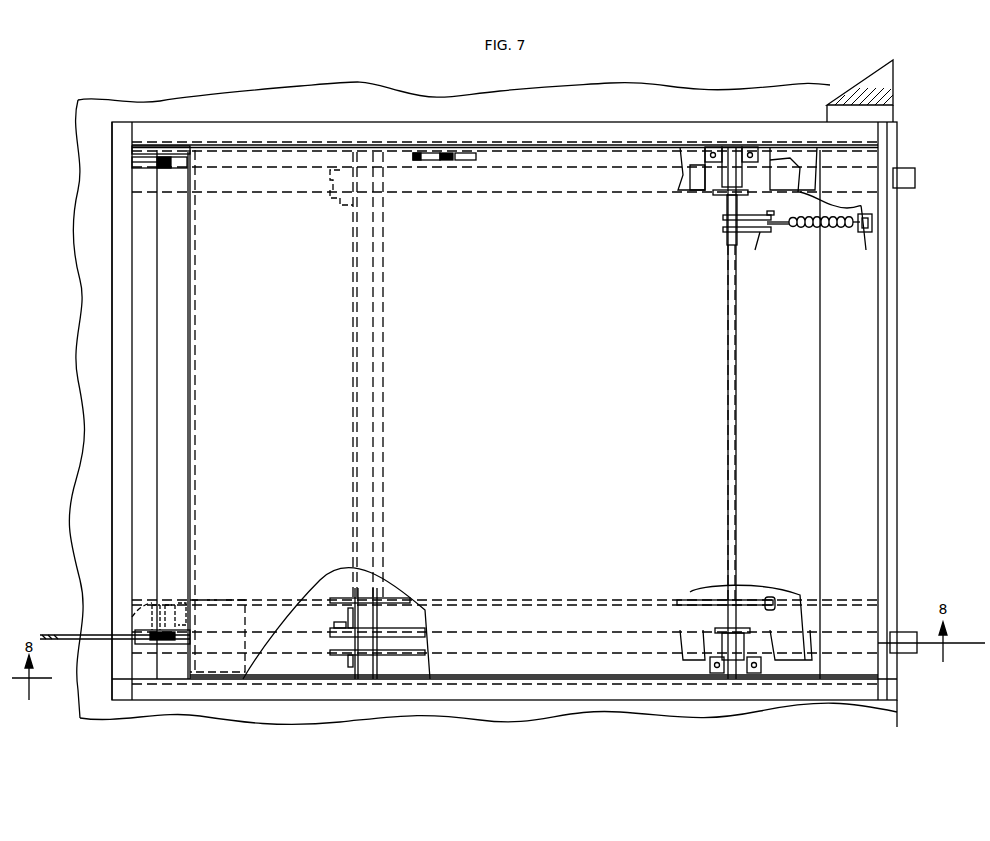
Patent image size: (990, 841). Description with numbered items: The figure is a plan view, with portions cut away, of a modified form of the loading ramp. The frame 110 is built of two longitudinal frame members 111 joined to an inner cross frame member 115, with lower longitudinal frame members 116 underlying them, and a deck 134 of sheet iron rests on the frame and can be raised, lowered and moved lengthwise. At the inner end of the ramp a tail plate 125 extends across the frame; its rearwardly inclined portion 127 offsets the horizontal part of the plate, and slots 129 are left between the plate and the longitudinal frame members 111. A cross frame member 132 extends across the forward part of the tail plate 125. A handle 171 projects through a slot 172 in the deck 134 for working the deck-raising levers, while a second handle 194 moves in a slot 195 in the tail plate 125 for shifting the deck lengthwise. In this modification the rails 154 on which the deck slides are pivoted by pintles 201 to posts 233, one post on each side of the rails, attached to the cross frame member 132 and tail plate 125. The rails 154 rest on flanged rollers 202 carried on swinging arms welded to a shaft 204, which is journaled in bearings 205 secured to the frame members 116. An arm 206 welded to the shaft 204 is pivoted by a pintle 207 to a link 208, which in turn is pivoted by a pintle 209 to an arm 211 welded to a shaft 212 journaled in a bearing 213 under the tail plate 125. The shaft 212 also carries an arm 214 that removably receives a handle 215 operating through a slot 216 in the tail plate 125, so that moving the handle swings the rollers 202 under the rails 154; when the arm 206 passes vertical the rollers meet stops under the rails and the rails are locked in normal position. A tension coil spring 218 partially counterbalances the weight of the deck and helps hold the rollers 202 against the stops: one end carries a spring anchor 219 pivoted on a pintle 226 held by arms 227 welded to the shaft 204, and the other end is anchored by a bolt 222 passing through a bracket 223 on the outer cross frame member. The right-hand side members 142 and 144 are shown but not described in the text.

The frame 110 is at (850, 690).
The longitudinal frame members 111 is at (432, 140).
The inner cross frame member 115 is at (124, 437).
The longitudinal frame members 116 is at (768, 152).
The tail plate 125 is at (147, 476).
The rearwardly inclined portion 127 is at (177, 503).
The slots 129 is at (178, 150).
The cross frame member 132 is at (355, 530).
The deck 134 is at (596, 438).
The right frame member 142 is at (860, 432).
The guide rail 144 is at (188, 478).
The rails 154 is at (695, 180).
The handle 171 is at (444, 160).
The slot 172 is at (468, 160).
The handle 194 is at (165, 155).
The slot 195 is at (180, 163).
The pintles 201 is at (340, 657).
The flanged rollers 202 is at (730, 180).
The shaft 204 is at (730, 250).
The bearings 205 is at (728, 150).
The arm 206 is at (752, 600).
The pintle 207 is at (770, 600).
The link 208 is at (308, 602).
The pintle 209 is at (186, 600).
The arm 211 is at (156, 604).
The shaft 212 is at (170, 604).
The bearing 213 is at (135, 615).
The arm 214 is at (170, 637).
The handle 215 is at (88, 642).
The slot 216 is at (140, 632).
The tension coil spring 218 is at (822, 232).
The spring anchor 219 is at (782, 224).
The bolt 222 is at (866, 246).
The bracket 223 is at (872, 226).
The pintle 226 is at (766, 236).
The arms 227 is at (754, 236).
The posts 233 is at (349, 610).